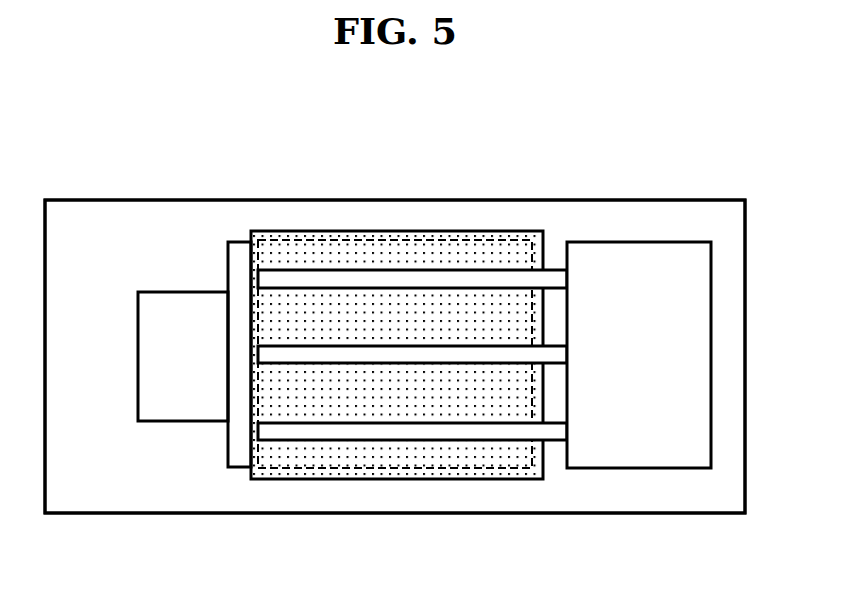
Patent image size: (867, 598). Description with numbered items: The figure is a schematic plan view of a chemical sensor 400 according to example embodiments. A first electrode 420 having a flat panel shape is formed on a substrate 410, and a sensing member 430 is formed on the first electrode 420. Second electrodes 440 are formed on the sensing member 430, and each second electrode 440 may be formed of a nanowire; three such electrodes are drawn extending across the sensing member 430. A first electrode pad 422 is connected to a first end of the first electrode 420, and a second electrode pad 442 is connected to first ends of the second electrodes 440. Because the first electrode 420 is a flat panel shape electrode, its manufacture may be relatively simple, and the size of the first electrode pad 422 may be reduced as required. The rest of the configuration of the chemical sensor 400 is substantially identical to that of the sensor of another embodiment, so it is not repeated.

The chemical sensor 400 is at (197, 122).
The substrate 410 is at (545, 197).
The first electrode 420 is at (237, 457).
The first electrode pad 422 is at (165, 392).
The sensing member 430 is at (420, 462).
The second electrodes 440 is at (480, 430).
The second electrode pad 442 is at (632, 458).